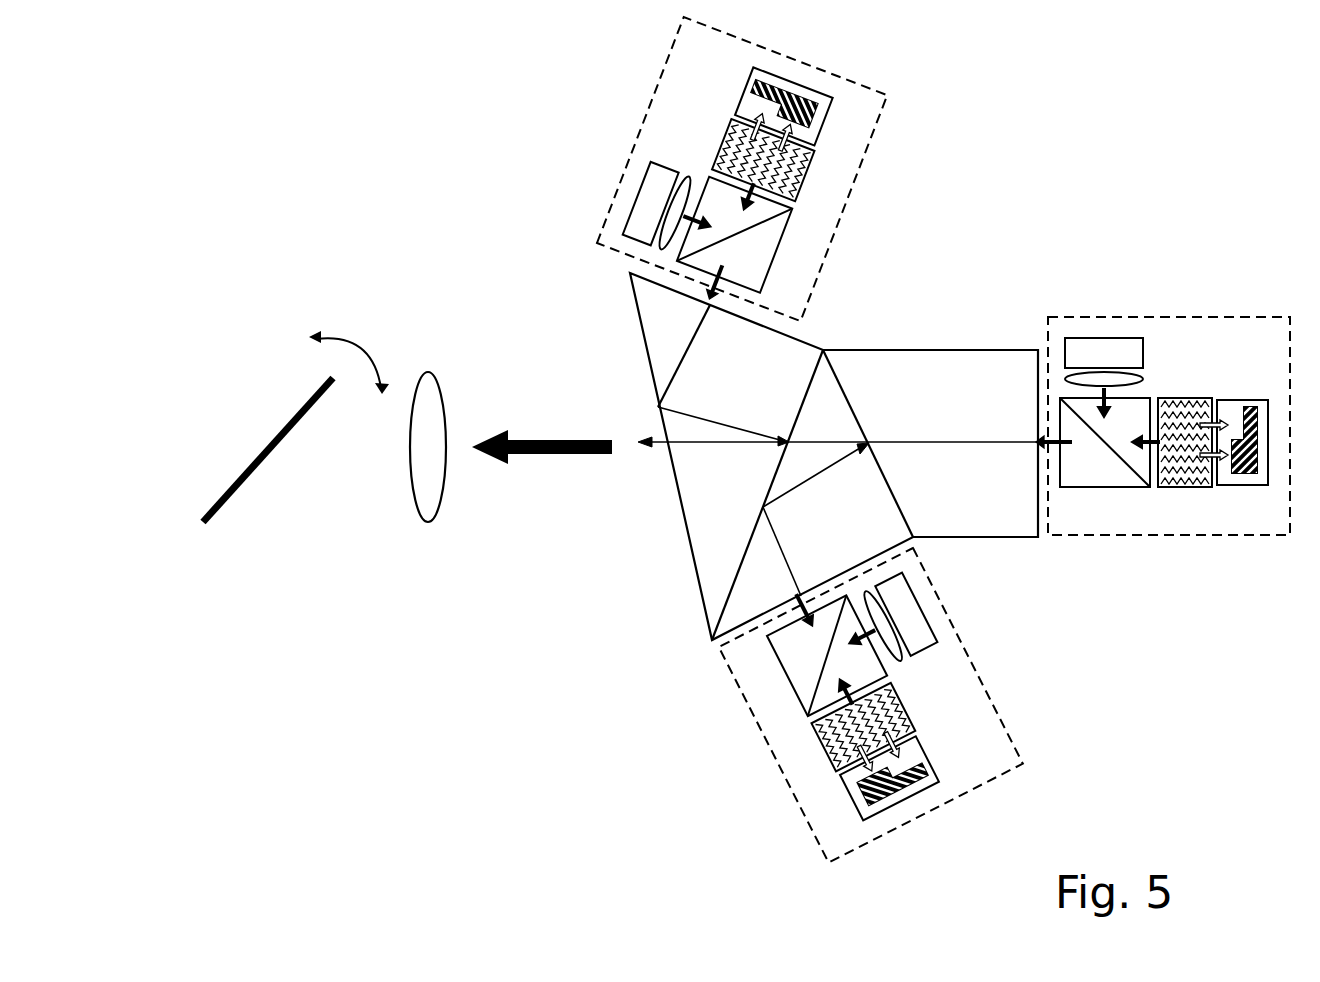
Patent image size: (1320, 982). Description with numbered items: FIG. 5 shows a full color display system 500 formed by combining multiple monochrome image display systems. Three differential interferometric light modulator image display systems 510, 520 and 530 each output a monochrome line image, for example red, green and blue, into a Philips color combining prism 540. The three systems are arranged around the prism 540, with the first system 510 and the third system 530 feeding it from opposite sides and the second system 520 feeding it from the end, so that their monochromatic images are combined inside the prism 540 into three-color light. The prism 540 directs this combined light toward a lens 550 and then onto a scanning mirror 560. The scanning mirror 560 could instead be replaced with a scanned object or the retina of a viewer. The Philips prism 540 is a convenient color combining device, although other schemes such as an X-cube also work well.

The scanning light engine / optical system 500 is at (1105, 112).
The differential interferometric light modulator image display system 510 is at (807, 78).
The differential interferometric light modulator image display system 520 is at (1180, 328).
The differential interferometric light modulator image display system 530 is at (997, 728).
The Philips color combining prism 540 is at (895, 338).
The lens 550 is at (455, 503).
The scanning mirror 560 is at (202, 537).